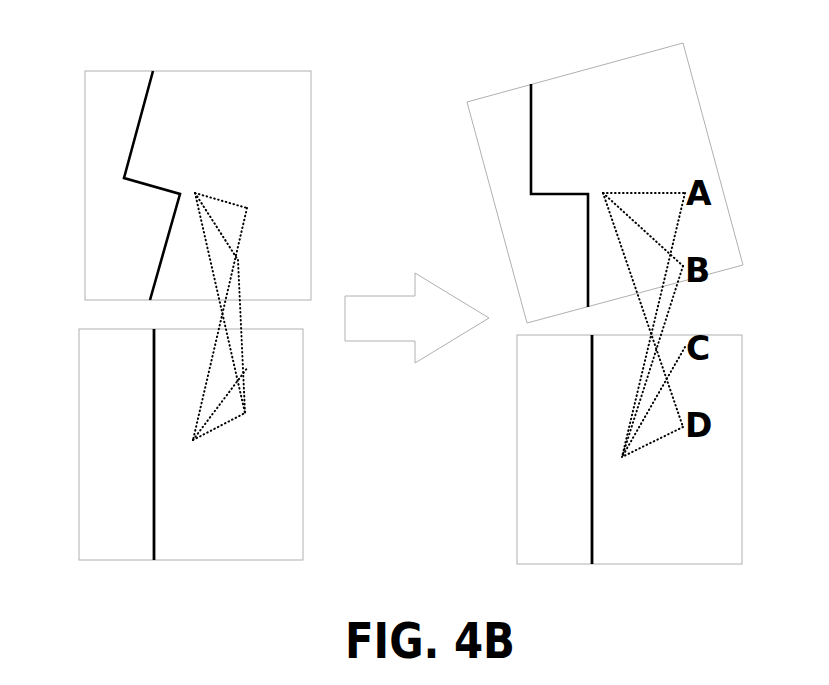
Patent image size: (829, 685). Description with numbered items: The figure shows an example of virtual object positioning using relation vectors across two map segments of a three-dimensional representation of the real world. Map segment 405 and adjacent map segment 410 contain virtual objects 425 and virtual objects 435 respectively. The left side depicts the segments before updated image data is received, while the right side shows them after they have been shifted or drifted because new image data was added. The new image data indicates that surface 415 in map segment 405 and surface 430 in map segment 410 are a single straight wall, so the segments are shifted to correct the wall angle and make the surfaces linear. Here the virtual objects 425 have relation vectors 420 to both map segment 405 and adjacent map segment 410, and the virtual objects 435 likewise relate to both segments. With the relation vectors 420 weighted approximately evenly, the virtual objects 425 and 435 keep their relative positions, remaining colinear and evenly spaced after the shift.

The map segment 405 is at (199, 71).
The adjacent map segment 410 is at (79, 445).
The surface 415 is at (167, 236).
The relation vectors 420 is at (225, 200).
The virtual objects 425 is at (270, 216).
The surface 430 is at (153, 450).
The virtual objects 435 is at (273, 365).